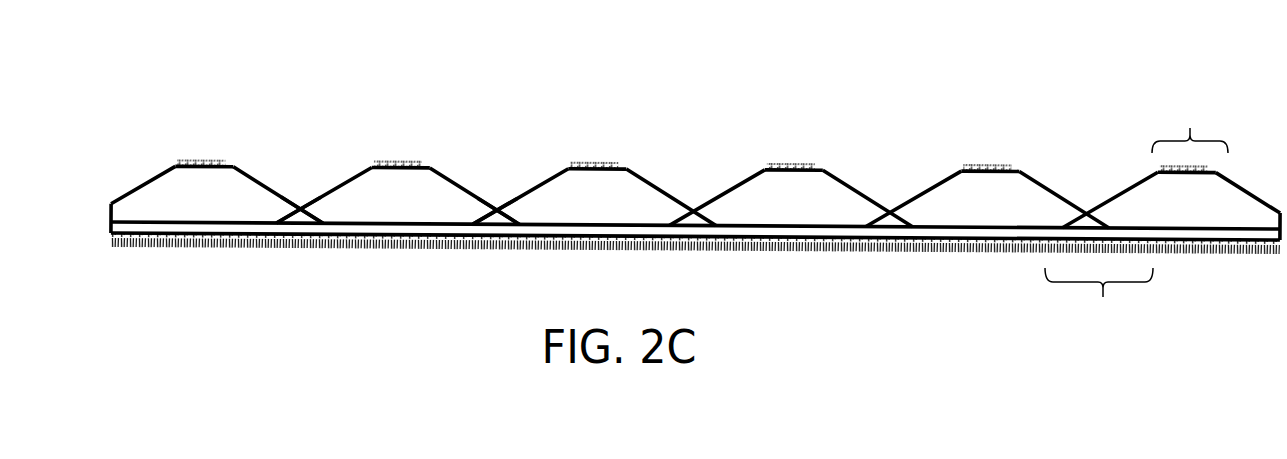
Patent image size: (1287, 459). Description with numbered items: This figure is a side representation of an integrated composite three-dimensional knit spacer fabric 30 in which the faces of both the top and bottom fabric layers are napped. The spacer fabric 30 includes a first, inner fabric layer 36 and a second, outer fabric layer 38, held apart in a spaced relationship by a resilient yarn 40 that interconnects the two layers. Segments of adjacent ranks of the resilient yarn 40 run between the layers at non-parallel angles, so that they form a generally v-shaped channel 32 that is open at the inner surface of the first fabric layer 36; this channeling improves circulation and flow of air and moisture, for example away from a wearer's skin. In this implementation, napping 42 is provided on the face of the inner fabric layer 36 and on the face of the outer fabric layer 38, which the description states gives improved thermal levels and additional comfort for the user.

The spacer fabric 30 is at (1012, 94).
The v-shaped channel 32 is at (300, 192).
The first (inner) fabric layer 36 is at (594, 165).
The second (outer) fabric layer 38 is at (838, 244).
The resilient yarn 40 is at (667, 192).
The napping 42 is at (1136, 214).